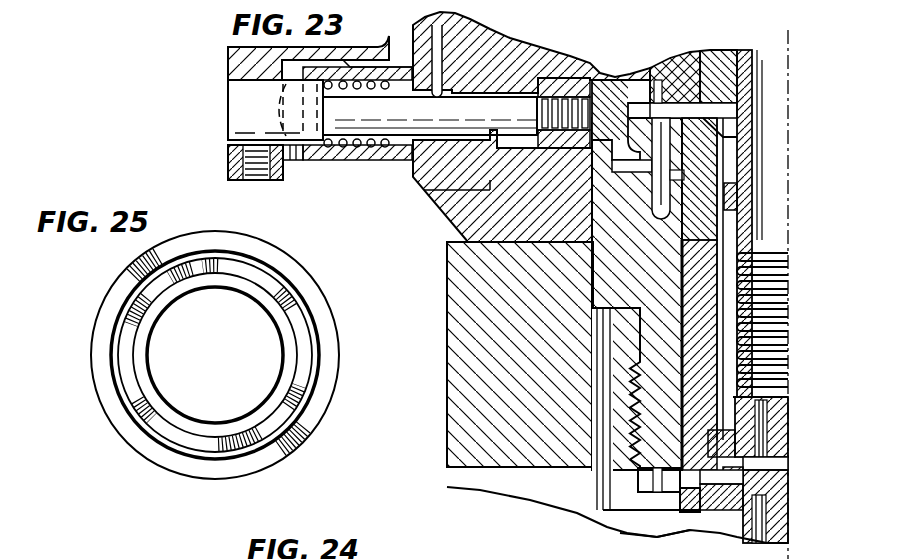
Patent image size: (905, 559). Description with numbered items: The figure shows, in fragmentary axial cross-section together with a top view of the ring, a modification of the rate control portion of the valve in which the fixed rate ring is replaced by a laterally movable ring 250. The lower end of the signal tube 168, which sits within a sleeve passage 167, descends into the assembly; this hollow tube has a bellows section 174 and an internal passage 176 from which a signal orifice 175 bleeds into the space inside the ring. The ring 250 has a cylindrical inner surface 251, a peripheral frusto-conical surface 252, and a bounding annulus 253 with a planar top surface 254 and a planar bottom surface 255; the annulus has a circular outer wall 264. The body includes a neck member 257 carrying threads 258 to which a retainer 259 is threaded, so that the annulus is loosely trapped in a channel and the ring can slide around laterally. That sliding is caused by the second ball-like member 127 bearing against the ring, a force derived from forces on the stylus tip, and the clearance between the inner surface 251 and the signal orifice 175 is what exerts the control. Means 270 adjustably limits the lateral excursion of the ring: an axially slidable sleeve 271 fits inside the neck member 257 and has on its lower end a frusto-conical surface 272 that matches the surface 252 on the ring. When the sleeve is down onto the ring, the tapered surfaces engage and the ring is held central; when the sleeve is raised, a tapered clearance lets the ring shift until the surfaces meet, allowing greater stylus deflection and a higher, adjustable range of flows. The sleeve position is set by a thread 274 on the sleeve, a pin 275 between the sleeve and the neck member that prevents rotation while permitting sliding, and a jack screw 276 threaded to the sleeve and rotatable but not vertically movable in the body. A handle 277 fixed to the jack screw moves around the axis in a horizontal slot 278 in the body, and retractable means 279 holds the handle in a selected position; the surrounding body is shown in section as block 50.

In FIG. 23, the housing block 50 is at (449, 445).
In FIG. 23, the second ball-like member 127 is at (750, 457).
In FIG. 23, the sleeve passage 167 is at (718, 226).
In FIG. 23, the signal tube 168 is at (735, 166).
In FIG. 23, the bellows section 174 is at (783, 298).
In FIG. 23, the signal orifice 175 is at (735, 500).
In FIG. 23, the internal passage 176 is at (760, 430).
In FIG. 25, the ring 250 is at (157, 471).
In FIG. 23, the cylindrical inner surface 251 is at (700, 492).
In FIG. 25, the cylindrical inner surface 251 is at (284, 358).
In FIG. 25, the peripheral frusto-conical surface 252 is at (297, 313).
In FIG. 25, the bounding annulus 253 is at (285, 265).
In FIG. 23, the planar top surface 254 is at (700, 474).
In FIG. 23, the planar bottom surface 255 is at (610, 475).
In FIG. 23, the neck member 257 is at (590, 285).
In FIG. 23, the threads 258 is at (628, 430).
In FIG. 23, the retainer 259 is at (605, 420).
In FIG. 25, the circular outer wall 264 is at (103, 408).
In FIG. 23, the means to adjustably limit lateral excursion 270 is at (722, 132).
In FIG. 23, the axially slidable sleeve 271 is at (700, 100).
In FIG. 23, the frusto-conical surface 272 is at (740, 445).
In FIG. 23, the thread 274 is at (622, 135).
In FIG. 23, the pin 275 is at (733, 197).
In FIG. 23, the jack screw 276 is at (566, 82).
In FIG. 23, the handle 277 is at (462, 100).
In FIG. 23, the horizontal slot 278 is at (437, 95).
In FIG. 23, the retractable means 279 is at (380, 164).